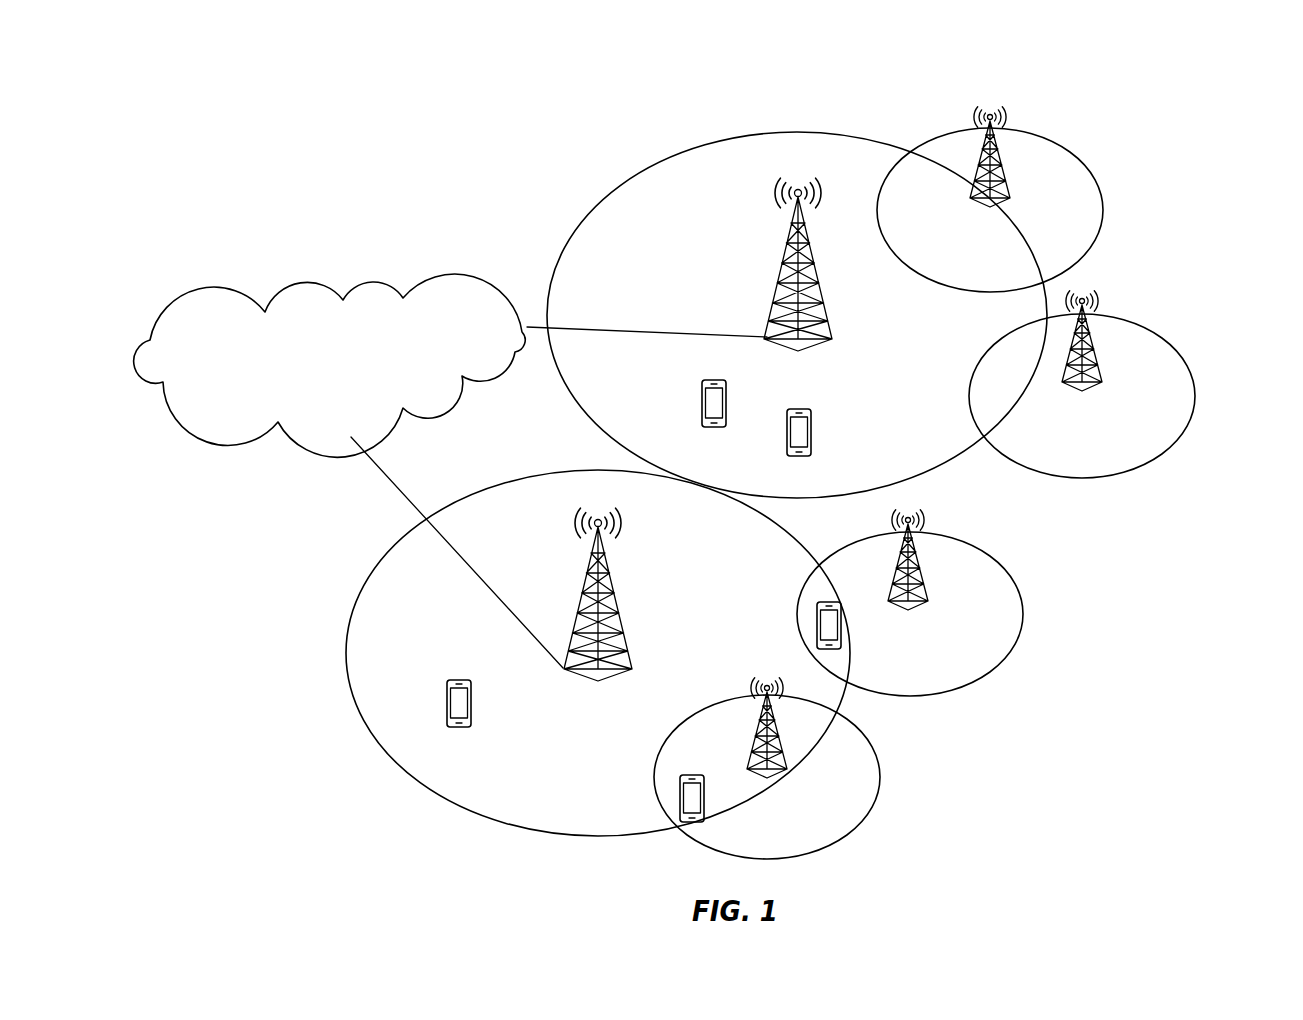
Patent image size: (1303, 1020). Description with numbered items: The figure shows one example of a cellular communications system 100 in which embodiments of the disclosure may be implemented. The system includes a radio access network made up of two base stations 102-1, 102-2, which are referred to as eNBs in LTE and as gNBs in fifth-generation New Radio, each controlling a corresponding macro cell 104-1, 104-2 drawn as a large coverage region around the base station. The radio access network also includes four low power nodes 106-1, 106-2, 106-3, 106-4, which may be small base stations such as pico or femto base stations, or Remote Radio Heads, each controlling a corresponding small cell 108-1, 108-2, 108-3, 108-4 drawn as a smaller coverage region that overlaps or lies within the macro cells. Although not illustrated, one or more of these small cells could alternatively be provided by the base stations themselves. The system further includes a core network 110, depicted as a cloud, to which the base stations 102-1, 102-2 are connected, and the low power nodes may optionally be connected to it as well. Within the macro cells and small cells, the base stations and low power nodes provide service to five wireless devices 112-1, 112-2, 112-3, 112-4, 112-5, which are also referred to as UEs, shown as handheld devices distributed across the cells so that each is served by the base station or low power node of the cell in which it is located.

The cellular communications system 100 is at (1173, 95).
The core network 110 is at (347, 406).
The macro cell 104-1 is at (462, 821).
The macro cell 104-2 is at (803, 132).
The base station 102-1 is at (618, 615).
The base station 102-2 is at (820, 288).
The low power node 106-1 is at (785, 755).
The low power node 106-2 is at (918, 595).
The low power node 106-3 is at (1097, 372).
The low power node 106-4 is at (1005, 190).
The small cell 108-1 is at (879, 785).
The small cell 108-2 is at (1022, 620).
The small cell 108-3 is at (1193, 402).
The small cell 108-4 is at (1103, 200).
The wireless device 112-1 is at (718, 753).
The wireless device 112-2 is at (845, 580).
The wireless device 112-3 is at (474, 698).
The wireless device 112-4 is at (731, 410).
The wireless device 112-5 is at (816, 428).